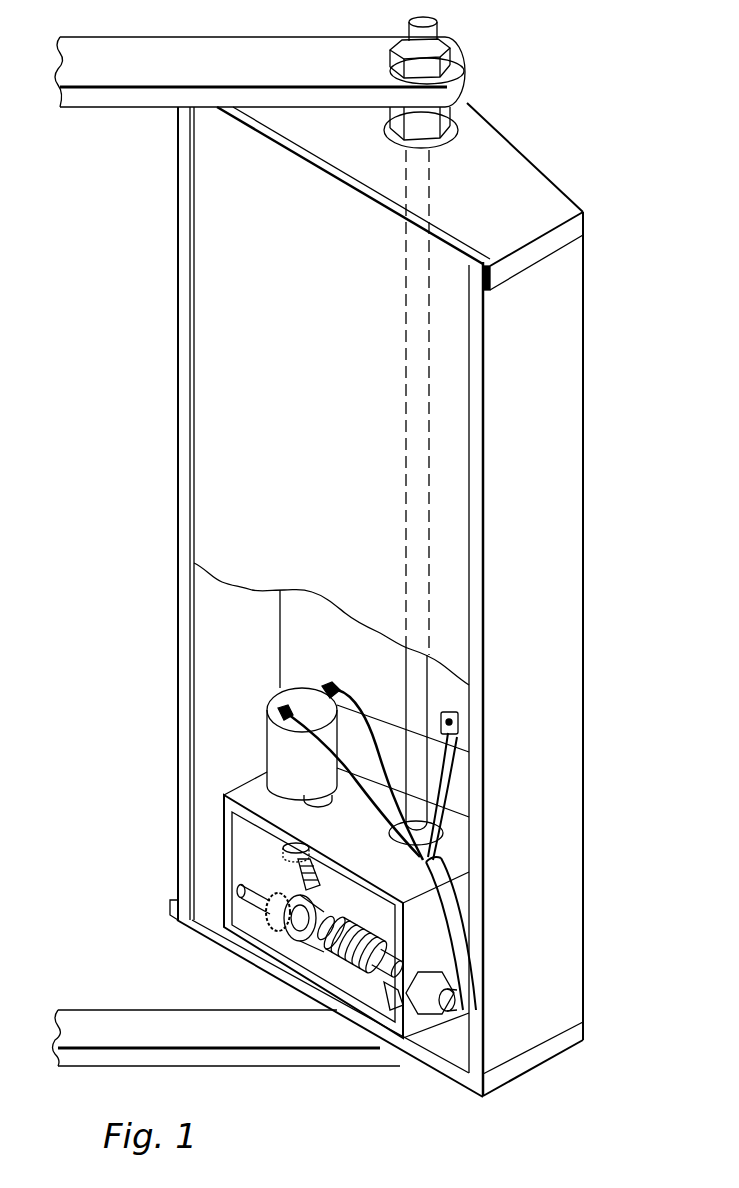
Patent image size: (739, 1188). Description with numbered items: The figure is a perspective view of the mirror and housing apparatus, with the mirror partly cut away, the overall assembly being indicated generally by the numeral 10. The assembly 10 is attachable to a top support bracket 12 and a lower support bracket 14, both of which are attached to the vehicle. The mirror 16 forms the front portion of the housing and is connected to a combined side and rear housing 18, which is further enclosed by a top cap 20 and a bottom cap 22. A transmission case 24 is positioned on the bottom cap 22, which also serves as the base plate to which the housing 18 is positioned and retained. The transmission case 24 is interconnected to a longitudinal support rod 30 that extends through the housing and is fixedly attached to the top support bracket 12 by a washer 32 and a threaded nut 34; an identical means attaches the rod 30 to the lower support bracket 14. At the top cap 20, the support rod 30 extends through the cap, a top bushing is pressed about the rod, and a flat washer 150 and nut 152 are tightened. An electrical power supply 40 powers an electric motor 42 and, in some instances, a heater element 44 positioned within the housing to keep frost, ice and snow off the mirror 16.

The overall assembly of the mirror and housing 10 is at (150, 589).
The top support bracket 12 is at (112, 107).
The lower support bracket 14 is at (100, 1008).
The mirror 16 is at (303, 442).
The combined side and rear housing 18 is at (584, 745).
The top cap 20 is at (522, 198).
The bottom cap 22 is at (443, 1080).
The transmission case 24 is at (208, 873).
The longitudinal support rod 30 is at (416, 690).
The washer 32 is at (452, 62).
The threaded nut 34 is at (443, 31).
The electrical power supply 40 is at (453, 898).
The electric motor 42 is at (283, 757).
The heater element 44 is at (310, 638).
The flat washer 150 is at (452, 128).
The nut 152 is at (446, 110).